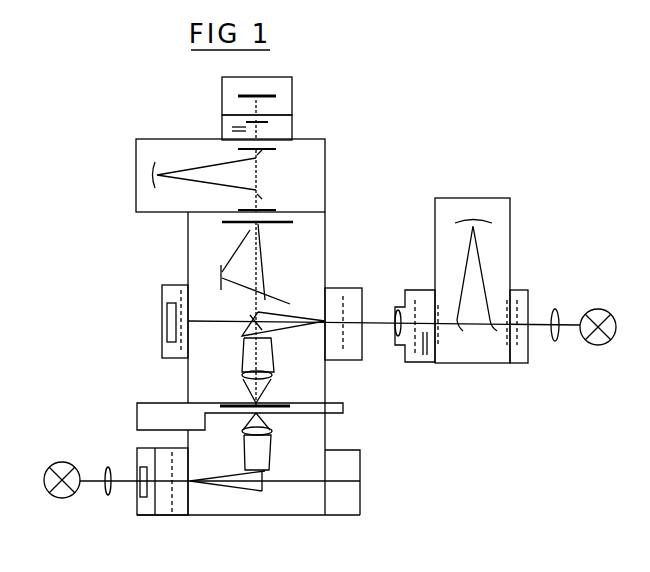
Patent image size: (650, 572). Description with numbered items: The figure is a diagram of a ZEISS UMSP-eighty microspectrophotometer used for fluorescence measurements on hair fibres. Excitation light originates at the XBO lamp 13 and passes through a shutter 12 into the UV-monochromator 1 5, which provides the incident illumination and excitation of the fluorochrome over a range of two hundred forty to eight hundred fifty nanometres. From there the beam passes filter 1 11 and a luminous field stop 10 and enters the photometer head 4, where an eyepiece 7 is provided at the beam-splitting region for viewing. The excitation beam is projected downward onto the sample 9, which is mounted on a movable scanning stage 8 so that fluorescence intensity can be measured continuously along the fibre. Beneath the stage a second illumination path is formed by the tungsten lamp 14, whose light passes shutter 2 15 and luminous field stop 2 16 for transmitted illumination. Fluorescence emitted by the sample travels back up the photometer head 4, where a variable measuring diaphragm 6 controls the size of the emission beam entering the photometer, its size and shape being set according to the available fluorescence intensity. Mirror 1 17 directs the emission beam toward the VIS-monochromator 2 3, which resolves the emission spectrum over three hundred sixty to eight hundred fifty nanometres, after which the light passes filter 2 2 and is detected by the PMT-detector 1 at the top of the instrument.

The PMT-detector 1 is at (244, 96).
The filter 2 is at (246, 127).
The VIS-monochromator 2 3 is at (219, 175).
The photometer head 4 is at (248, 363).
The UV-monochromator 1 5 is at (472, 267).
The variable measuring diaphragm 6 is at (283, 215).
The eyepiece 7 is at (294, 304).
The scanning stage 8 is at (240, 403).
The sample 9 is at (300, 387).
The luminous field stop 10 is at (312, 345).
The filter 1 11 is at (416, 337).
The shutter 12 is at (517, 339).
The XBO lamp 13 is at (598, 340).
The tungsten lamp 14 is at (62, 493).
The shutter 2 15 is at (161, 496).
The luminous field stop 2 16 is at (213, 479).
The mirror 1 17 is at (243, 267).